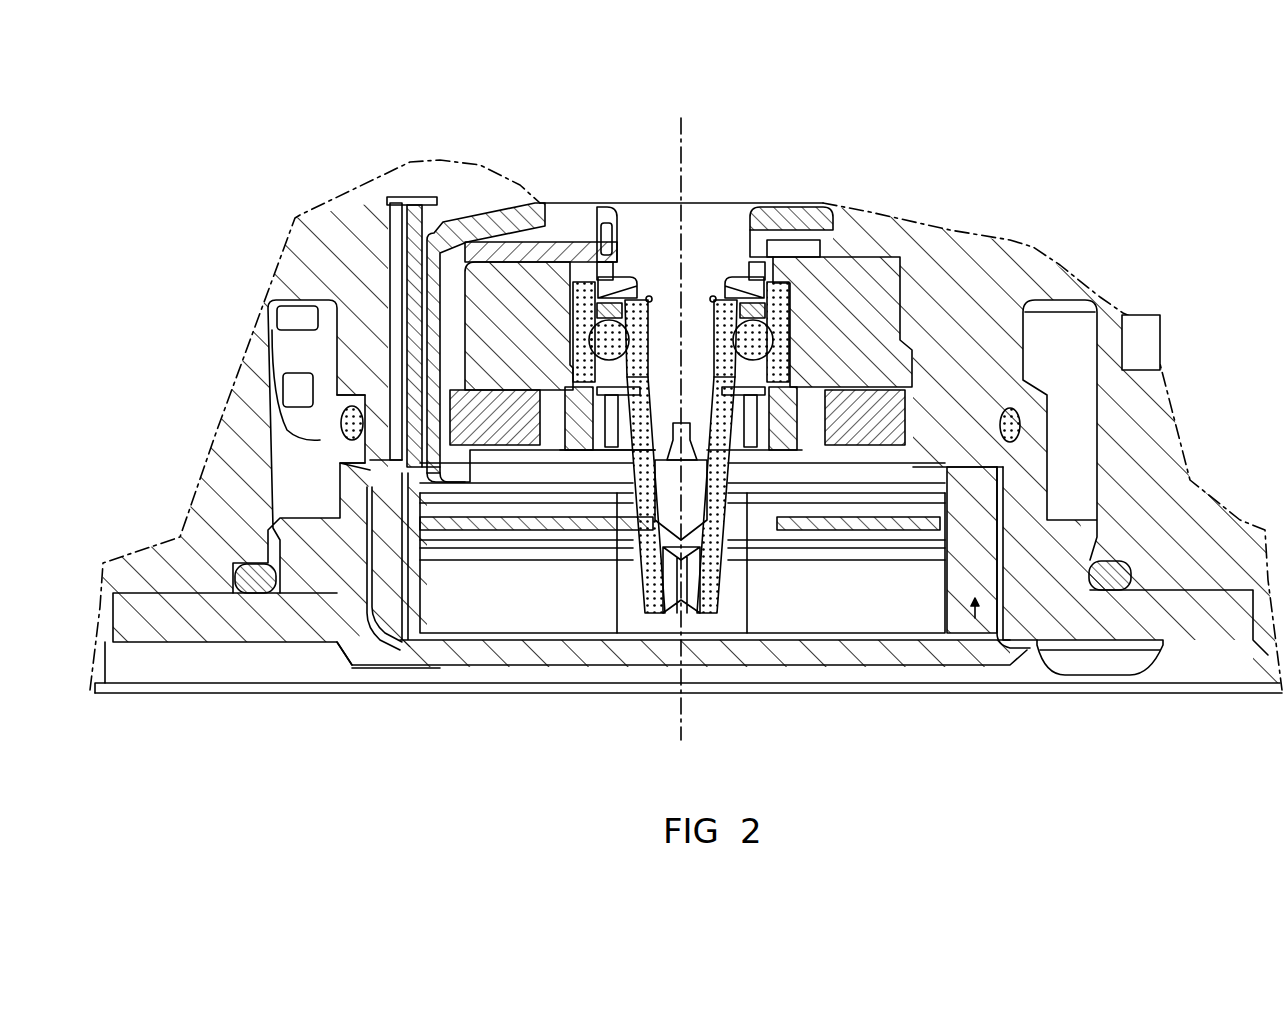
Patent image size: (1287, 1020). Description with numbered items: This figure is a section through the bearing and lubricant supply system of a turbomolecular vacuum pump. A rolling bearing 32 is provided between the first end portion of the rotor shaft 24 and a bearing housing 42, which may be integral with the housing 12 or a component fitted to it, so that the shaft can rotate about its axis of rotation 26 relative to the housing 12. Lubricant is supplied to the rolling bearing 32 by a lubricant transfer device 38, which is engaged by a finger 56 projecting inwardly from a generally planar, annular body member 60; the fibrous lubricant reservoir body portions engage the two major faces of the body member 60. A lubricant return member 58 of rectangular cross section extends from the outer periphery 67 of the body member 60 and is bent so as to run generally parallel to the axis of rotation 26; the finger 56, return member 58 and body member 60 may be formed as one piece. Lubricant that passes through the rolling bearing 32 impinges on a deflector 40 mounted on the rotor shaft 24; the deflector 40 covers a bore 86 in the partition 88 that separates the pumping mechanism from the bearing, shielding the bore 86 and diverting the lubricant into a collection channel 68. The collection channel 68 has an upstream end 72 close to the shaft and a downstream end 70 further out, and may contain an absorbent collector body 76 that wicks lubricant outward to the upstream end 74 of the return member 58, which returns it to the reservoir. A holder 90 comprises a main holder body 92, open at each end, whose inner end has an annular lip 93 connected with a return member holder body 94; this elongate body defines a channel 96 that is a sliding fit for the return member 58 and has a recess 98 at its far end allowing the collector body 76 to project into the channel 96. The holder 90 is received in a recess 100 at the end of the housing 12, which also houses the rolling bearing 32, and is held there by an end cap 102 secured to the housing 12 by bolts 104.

The housing 12 is at (130, 567).
The rotor shaft 24 is at (705, 213).
The axis of rotation 26 is at (684, 118).
The rolling bearing 32 is at (783, 293).
The lubricant transfer device 38 is at (721, 595).
The deflector 40 is at (738, 275).
The bearing housing 42 is at (795, 268).
The finger 56 is at (630, 527).
The lubricant return member 58 is at (413, 287).
The body member 60 is at (470, 523).
The outer periphery 67 is at (400, 642).
The collection channel 68 is at (537, 245).
The downstream end 70 is at (450, 220).
The upstream end 72 is at (593, 222).
The upstream end 74 is at (425, 250).
The collector body 76 is at (485, 245).
The bore 86 is at (617, 227).
The partition 88 is at (1003, 260).
The holder 90 is at (1007, 645).
The main holder body 92 is at (387, 622).
The annular lip 93 is at (933, 473).
The return member holder body 94 is at (397, 300).
The channel 96 is at (418, 213).
The recess 98 is at (426, 197).
The recess 100 is at (280, 500).
The end cap 102 is at (177, 642).
The bolts 104 is at (333, 660).